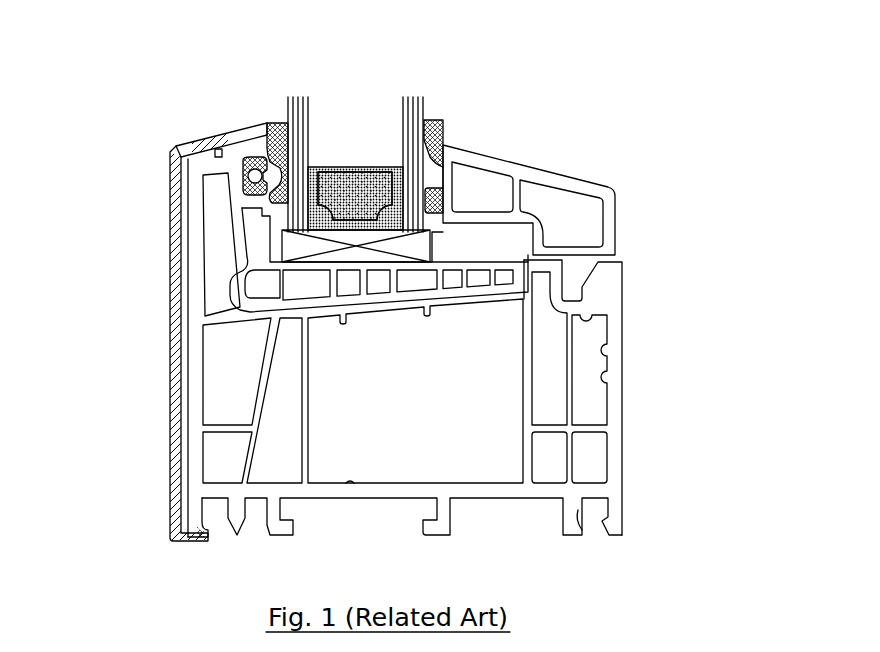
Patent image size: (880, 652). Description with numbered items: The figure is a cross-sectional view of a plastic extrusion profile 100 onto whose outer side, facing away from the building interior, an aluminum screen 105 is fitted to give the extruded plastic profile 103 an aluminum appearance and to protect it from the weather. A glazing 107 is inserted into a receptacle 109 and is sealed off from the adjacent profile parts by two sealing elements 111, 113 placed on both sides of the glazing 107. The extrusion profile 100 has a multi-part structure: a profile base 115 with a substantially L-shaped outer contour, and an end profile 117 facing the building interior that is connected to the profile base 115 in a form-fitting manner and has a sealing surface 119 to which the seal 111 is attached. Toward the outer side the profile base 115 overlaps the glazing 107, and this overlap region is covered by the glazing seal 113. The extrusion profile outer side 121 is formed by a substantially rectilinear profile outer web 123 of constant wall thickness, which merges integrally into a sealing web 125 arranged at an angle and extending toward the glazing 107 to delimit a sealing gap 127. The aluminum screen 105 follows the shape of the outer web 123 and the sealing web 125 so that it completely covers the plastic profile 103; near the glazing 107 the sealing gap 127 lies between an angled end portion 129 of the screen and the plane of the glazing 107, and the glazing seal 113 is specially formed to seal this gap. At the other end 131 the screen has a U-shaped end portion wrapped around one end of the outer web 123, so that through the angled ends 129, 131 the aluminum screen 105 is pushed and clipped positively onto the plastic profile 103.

The plastic extrusion profile 100 is at (694, 166).
The extruded plastic profile 103 is at (624, 367).
The aluminum screen 105 is at (170, 270).
The glazing 107 is at (405, 116).
The receptacle 109 is at (493, 240).
The sealing element 111 is at (437, 135).
The glazing seal 113 is at (281, 124).
The profile base 115 is at (623, 317).
The end profile 117 is at (520, 158).
The sealing surface 119 is at (445, 160).
The extrusion profile outer side 121 is at (185, 392).
The profile outer web 123 is at (198, 457).
The sealing web 125 is at (220, 128).
The sealing gap 127 is at (277, 175).
The angled end portion 129 is at (260, 128).
The other end 131 is at (192, 540).